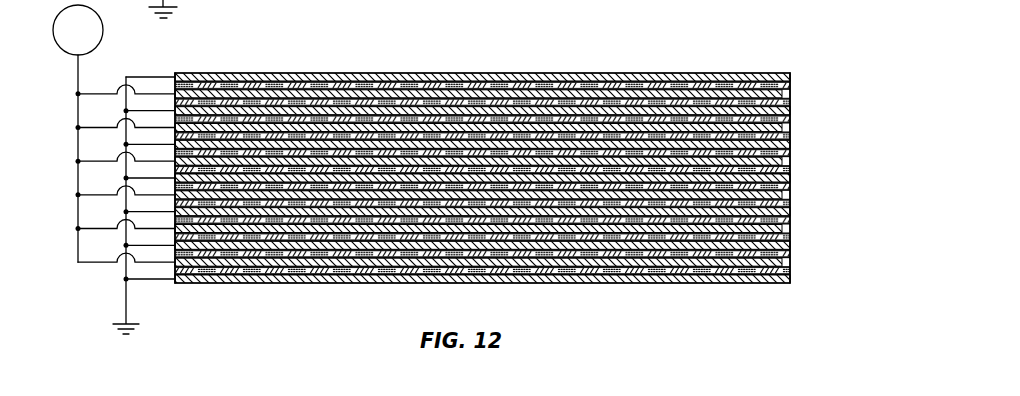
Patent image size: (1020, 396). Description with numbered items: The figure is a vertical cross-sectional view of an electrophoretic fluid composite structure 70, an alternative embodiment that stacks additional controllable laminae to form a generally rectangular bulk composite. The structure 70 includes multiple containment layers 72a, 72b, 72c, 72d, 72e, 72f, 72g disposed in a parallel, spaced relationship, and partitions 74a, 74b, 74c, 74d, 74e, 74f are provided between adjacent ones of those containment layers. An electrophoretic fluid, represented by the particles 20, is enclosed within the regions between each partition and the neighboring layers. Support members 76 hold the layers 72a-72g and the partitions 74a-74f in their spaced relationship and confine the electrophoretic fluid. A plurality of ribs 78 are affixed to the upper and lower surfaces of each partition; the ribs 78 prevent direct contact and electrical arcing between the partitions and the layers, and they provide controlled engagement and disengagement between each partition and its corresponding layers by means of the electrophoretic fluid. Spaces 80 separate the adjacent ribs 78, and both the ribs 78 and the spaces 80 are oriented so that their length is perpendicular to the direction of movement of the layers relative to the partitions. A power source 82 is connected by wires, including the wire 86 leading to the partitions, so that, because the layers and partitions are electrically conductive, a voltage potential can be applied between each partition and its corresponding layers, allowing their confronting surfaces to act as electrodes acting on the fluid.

The particles 20 is at (501, 171).
The electrophoretic fluid composite structure 70 is at (297, 66).
The containment layer 72a is at (791, 75).
The containment layer 72b is at (791, 111).
The containment layer 72c is at (791, 144).
The containment layer 72d is at (791, 178).
The containment layer 72e is at (791, 212).
The containment layer 72f is at (791, 245).
The containment layer 72g is at (791, 279).
The partition 74a is at (791, 94).
The partition 74b is at (791, 128).
The partition 74c is at (791, 161).
The partition 74d is at (791, 195).
The partition 74e is at (791, 228).
The partition 74f is at (791, 262).
The support members 76 is at (174, 82).
The ribs 78 is at (333, 82).
The spaces 80 is at (390, 82).
The power source 82 is at (103, 31).
The wire 86 is at (125, 300).